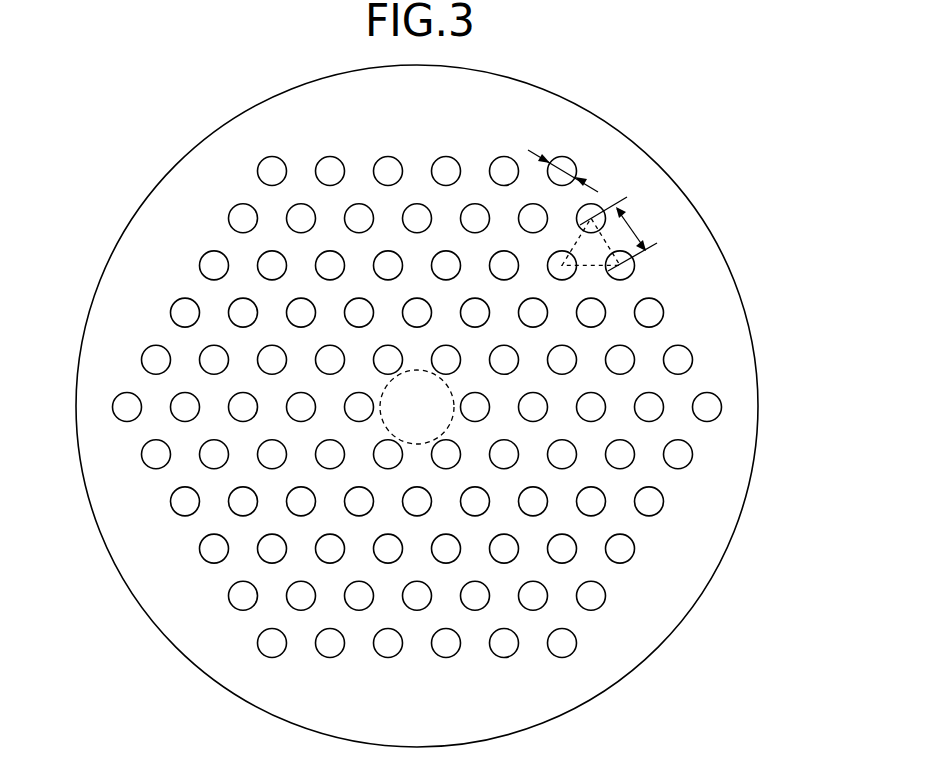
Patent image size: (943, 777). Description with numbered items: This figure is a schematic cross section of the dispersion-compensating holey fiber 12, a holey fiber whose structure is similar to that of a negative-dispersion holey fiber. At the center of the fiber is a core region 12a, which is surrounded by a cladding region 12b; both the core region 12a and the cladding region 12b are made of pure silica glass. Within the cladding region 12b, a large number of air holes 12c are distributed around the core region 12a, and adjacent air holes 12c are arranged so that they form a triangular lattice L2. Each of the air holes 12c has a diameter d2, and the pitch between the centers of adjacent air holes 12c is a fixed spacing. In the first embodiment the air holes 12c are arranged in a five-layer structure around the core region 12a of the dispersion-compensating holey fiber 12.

The dispersion-compensating holey fiber 12 is at (689, 143).
The core region 12a is at (417, 444).
The cladding region 12b is at (636, 642).
The air holes 12c is at (720, 398).
The diameter of air hole d2 is at (563, 164).
The triangular lattice L2 is at (590, 266).